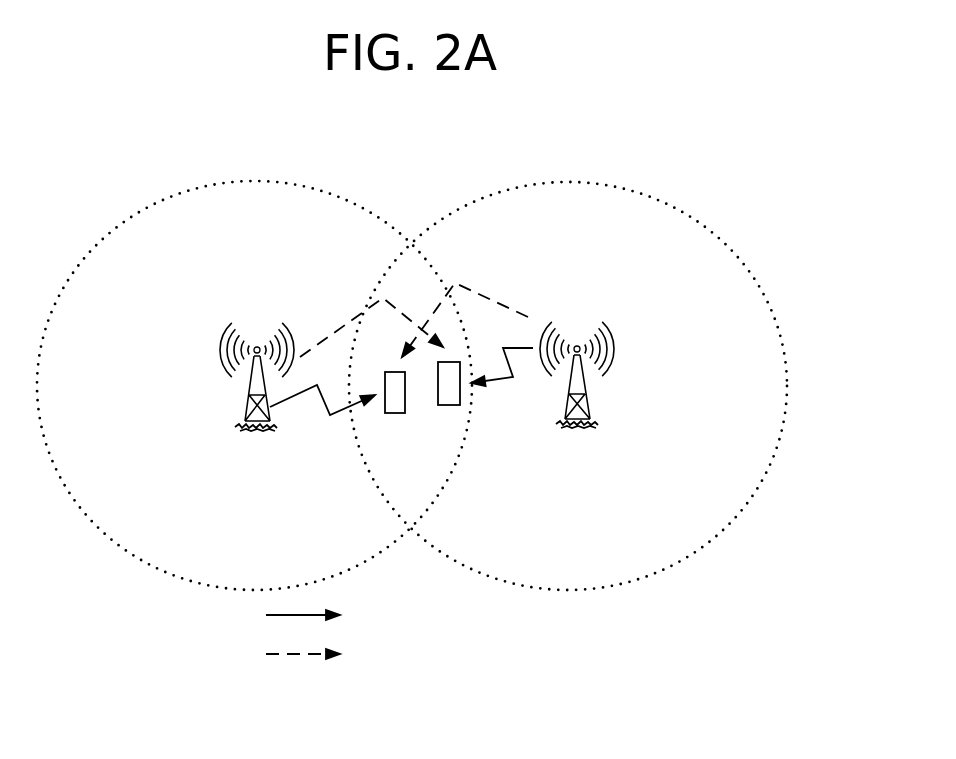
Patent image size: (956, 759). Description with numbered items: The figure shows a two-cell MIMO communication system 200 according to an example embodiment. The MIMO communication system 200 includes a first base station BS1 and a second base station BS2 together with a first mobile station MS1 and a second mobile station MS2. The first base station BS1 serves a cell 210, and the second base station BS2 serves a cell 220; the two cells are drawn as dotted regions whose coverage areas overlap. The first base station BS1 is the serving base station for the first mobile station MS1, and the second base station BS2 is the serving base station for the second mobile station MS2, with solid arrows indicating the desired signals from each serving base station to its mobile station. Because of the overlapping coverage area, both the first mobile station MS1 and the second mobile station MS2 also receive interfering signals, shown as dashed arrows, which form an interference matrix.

The MIMO communication system 200 is at (715, 138).
The cell 210 is at (177, 197).
The cell 220 is at (507, 190).
The first base station BS1 is at (247, 332).
The second base station BS2 is at (567, 330).
The first mobile station MS1 is at (397, 413).
The second mobile station MS2 is at (455, 405).